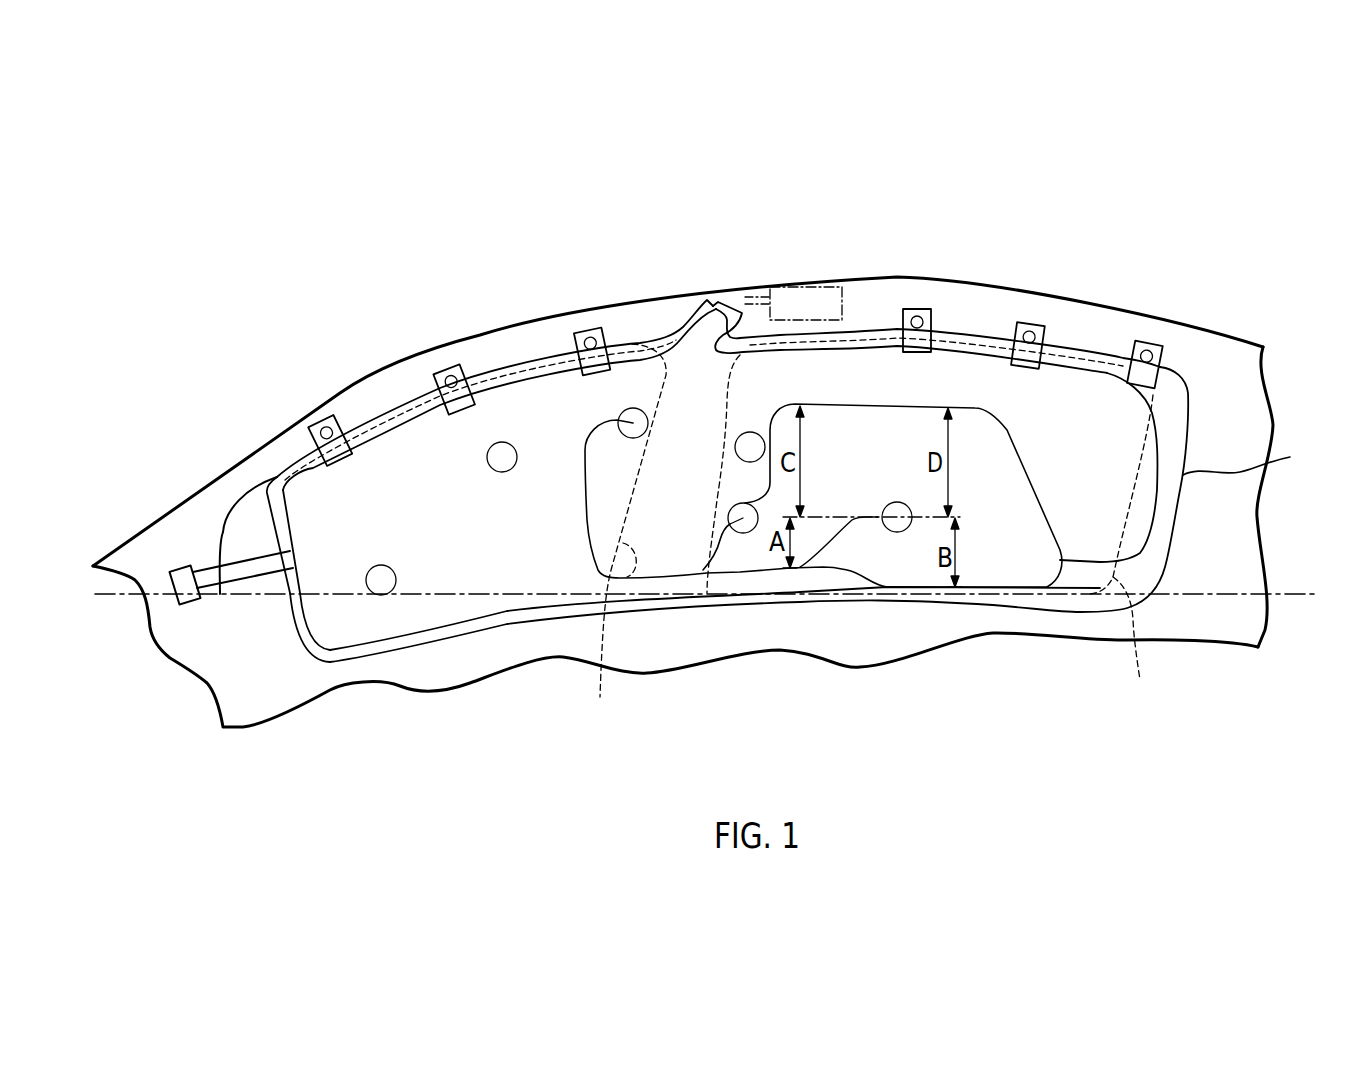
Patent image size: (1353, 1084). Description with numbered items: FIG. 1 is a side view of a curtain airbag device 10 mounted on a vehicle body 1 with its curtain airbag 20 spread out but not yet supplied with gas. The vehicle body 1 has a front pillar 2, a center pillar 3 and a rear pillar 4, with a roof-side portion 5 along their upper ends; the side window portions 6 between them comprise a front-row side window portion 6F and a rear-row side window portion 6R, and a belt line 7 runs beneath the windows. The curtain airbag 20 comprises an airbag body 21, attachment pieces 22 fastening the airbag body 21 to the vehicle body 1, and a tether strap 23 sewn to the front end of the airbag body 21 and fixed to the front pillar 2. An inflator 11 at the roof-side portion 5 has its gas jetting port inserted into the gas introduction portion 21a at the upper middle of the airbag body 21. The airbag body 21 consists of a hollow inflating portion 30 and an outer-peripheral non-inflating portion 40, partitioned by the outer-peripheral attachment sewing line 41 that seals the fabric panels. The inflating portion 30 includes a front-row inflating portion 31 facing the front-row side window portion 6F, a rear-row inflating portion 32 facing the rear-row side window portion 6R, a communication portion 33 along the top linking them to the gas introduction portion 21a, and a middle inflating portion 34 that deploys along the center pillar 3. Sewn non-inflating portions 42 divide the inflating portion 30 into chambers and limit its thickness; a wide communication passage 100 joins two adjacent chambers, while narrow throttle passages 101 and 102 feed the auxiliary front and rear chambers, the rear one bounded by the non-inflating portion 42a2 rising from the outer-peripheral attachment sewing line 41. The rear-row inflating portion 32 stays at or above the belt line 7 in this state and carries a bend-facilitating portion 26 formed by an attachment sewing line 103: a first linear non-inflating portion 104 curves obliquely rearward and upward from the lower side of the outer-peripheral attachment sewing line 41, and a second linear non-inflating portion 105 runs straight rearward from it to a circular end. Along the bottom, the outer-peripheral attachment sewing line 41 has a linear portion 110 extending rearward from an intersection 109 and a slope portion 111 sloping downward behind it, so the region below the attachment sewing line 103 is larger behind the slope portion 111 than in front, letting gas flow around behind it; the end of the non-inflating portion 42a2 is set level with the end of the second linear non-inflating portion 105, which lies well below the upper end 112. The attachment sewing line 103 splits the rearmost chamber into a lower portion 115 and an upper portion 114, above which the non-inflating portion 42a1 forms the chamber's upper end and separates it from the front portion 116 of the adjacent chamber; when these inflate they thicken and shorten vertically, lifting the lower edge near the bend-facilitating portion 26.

The vehicle body 1 is at (1273, 403).
The front pillar 2 is at (247, 473).
The center pillar 3 is at (600, 697).
The rear pillar 4 is at (1237, 522).
The roof-side portion 5 is at (515, 333).
The side window portions 6 is at (644, 550).
The front-row side window portion 6F is at (223, 532).
The rear-row side window portion 6R is at (1130, 550).
The belt line 7 is at (1293, 597).
The curtain airbag device 10 is at (718, 328).
The inflator 11 is at (793, 262).
The curtain airbag 20 is at (857, 328).
The airbag body 21 is at (1251, 455).
The gas introduction portion 21a is at (700, 308).
The attachment pieces 22 is at (323, 427).
The tether strap 23 is at (240, 563).
The bend-facilitating portion 26 is at (873, 572).
The inflating portion 30 is at (778, 488).
The front-row inflating portion 31 is at (515, 560).
The rear-row inflating portion 32 is at (1017, 573).
The communication portion 33 is at (631, 408).
The middle inflating portion 34 is at (660, 497).
The outer-peripheral non-inflating portion 40 is at (1168, 433).
The outer-peripheral attachment sewing line 41 is at (350, 650).
The non-inflating portions 42 is at (381, 580).
The non-inflating portion 42a1 is at (953, 463).
The non-inflating portion 42a2 is at (715, 573).
The communication passage 100 is at (683, 440).
The throttle passage 101 is at (377, 620).
The throttle passage 102 is at (750, 447).
The attachment sewing line 103 is at (852, 515).
The first linear non-inflating portion 104 is at (830, 572).
The second linear non-inflating portion 105 is at (853, 520).
The intersection 109 is at (813, 567).
The linear portion 110 is at (760, 572).
The slope portion 111 is at (872, 580).
The upper end 112 is at (750, 462).
The upper portion 114 is at (950, 403).
The lower portion 115 is at (903, 560).
The front portion 116 is at (877, 373).